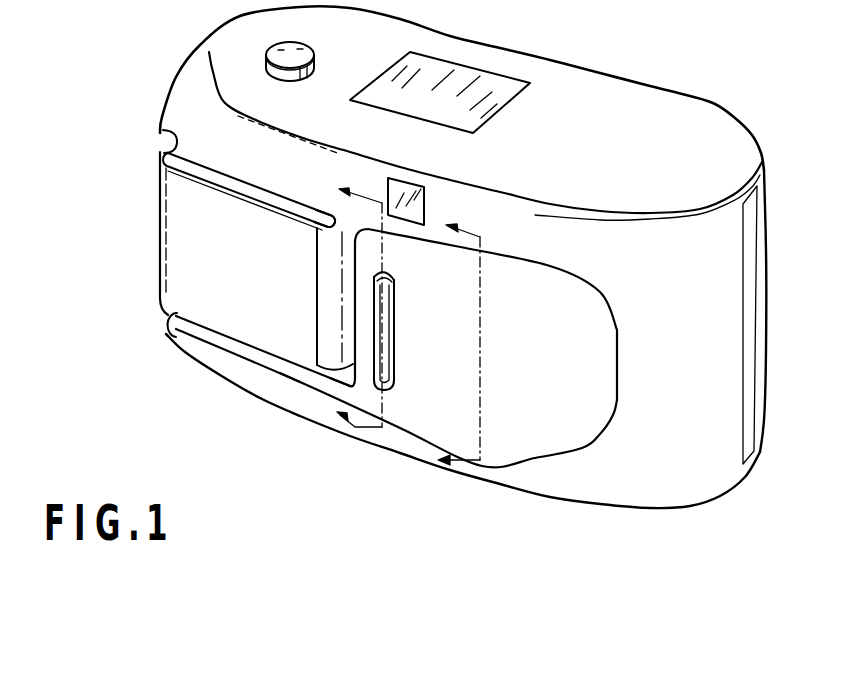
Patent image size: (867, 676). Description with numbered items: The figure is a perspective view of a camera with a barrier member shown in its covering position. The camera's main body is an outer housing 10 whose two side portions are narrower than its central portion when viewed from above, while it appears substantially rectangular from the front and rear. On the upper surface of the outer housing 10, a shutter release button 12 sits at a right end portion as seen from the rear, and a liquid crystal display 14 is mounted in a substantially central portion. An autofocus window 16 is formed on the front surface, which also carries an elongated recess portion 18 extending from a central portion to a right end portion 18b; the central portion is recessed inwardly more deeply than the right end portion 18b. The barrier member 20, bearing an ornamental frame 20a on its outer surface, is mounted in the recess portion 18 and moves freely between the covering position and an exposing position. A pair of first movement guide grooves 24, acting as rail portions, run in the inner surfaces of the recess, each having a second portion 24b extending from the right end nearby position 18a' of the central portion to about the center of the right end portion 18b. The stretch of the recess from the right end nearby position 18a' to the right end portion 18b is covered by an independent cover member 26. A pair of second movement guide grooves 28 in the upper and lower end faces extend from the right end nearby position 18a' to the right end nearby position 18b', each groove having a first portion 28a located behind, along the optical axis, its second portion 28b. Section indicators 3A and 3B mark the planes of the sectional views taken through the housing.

The outer housing 10 is at (712, 103).
The shutter release button 12 is at (309, 54).
The liquid crystal display 14 is at (475, 112).
The autofocus window 16 is at (400, 204).
The recess portion 18 is at (344, 287).
The right end nearby position 18a' is at (369, 446).
The right end portion 18b is at (245, 370).
The right end nearby position 18b' is at (138, 352).
The barrier member 20 is at (563, 388).
The ornamental frame 20a is at (391, 332).
The first movement guide grooves 24 is at (325, 374).
The second portion 24b is at (297, 382).
The cover member 26 is at (173, 242).
The second movement guide grooves 28 is at (266, 196).
The first portion 28a is at (320, 212).
The second portion 28b is at (166, 148).
The section line 3A is at (368, 309).
The section line 3B is at (479, 352).